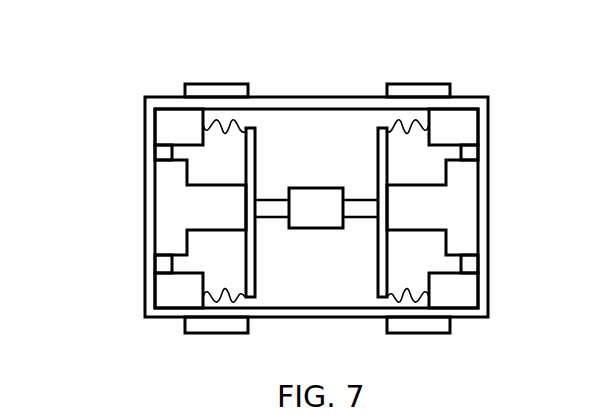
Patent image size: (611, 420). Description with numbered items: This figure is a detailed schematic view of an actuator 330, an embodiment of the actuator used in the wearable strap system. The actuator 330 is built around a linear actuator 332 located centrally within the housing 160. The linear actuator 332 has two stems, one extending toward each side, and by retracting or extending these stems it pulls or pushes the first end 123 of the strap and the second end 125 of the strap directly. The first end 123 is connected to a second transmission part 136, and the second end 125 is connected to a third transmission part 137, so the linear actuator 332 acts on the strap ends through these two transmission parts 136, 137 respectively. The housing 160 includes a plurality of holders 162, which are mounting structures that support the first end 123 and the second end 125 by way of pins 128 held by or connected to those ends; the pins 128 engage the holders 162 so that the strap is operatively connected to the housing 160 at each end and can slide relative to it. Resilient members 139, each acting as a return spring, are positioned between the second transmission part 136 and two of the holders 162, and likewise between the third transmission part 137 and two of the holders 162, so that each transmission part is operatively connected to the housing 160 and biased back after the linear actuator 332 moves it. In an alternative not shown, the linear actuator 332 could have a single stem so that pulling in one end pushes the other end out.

The actuator 330 is at (110, 82).
The linear actuator 332 is at (316, 176).
The housing 160 is at (488, 97).
The holders 162 is at (165, 122).
The pins 128 is at (165, 157).
The first end 123 is at (172, 212).
The second end 125 is at (462, 203).
The second transmission part 136 is at (258, 232).
The third transmission part 137 is at (374, 228).
The resilient members 139 is at (208, 125).